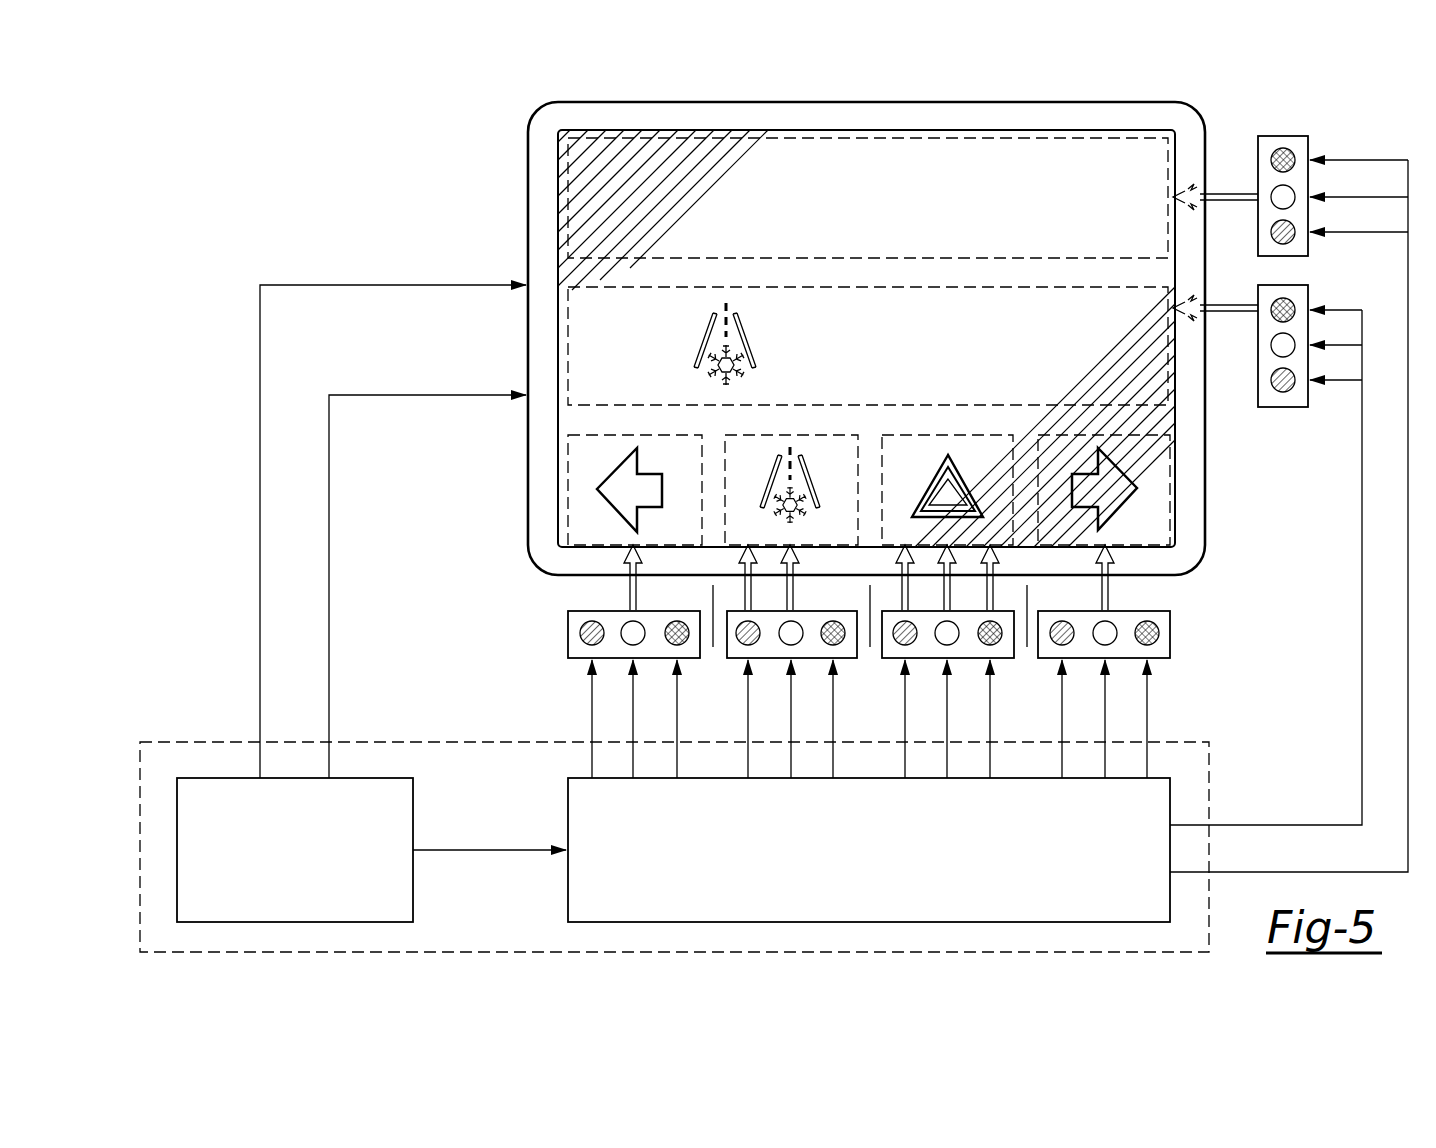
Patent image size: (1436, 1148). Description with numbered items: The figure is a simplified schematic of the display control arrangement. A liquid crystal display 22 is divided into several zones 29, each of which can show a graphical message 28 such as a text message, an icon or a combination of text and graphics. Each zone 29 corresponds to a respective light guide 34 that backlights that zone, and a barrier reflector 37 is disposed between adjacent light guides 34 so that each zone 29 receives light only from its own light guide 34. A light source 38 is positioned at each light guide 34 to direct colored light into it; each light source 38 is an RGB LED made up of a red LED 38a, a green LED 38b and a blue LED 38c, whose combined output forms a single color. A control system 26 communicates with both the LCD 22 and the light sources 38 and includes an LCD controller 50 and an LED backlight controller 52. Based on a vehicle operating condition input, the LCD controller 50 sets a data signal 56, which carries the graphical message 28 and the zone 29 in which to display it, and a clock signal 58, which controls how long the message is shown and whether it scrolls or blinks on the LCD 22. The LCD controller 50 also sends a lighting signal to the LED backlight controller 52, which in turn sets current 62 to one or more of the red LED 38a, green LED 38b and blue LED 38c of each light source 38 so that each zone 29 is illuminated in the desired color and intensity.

The liquid crystal display (LCD) 22 is at (1020, 98).
The control system 26 is at (1205, 735).
The graphical message 28 is at (967, 315).
The zone 29 is at (562, 208).
The light guide 34 is at (1180, 156).
The barrier reflector 37 is at (713, 585).
The light source 38 is at (1310, 136).
The red LED 38a is at (590, 632).
The green LED 38b is at (632, 630).
The blue LED 38c is at (678, 630).
The LCD controller 50 is at (414, 812).
The LED Backlight Controller 52 is at (568, 890).
The data signal 56 is at (261, 636).
The clock signal 58 is at (331, 596).
The current 62 is at (592, 760).